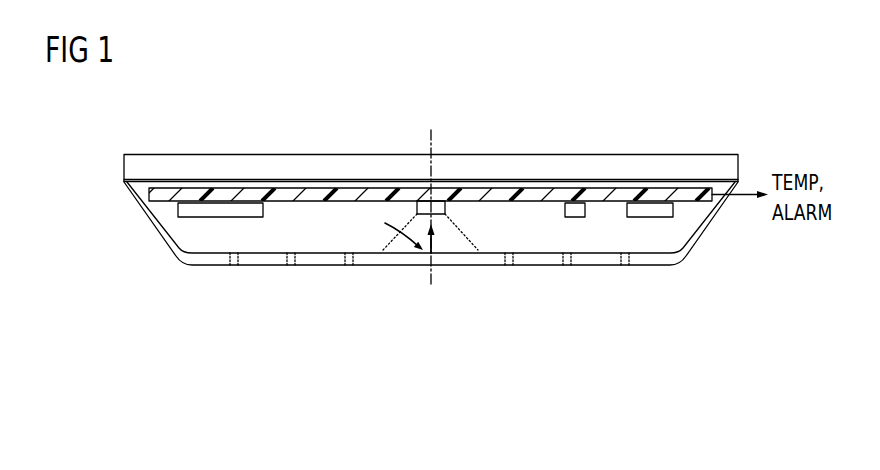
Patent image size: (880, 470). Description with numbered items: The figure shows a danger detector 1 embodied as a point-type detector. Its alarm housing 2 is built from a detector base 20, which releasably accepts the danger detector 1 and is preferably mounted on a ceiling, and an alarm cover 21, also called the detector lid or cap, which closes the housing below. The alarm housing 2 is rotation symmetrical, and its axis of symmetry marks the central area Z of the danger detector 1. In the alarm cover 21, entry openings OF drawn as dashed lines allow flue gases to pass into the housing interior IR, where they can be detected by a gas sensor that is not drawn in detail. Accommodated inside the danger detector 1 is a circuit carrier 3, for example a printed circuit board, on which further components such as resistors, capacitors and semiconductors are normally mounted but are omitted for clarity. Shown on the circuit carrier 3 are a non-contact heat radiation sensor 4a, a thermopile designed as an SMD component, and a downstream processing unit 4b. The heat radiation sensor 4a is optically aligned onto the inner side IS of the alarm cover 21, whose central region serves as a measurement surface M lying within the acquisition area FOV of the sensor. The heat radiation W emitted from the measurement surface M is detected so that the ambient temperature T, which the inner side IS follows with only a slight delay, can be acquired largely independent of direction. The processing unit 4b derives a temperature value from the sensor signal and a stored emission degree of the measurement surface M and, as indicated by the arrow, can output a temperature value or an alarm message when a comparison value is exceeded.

The danger detector 1 is at (401, 206).
The alarm housing 2 is at (401, 228).
The detector base 20 is at (124, 172).
The alarm cover 21 is at (692, 255).
The circuit carrier 3 is at (153, 199).
The heat radiation sensor 4a is at (445, 207).
The processing unit 4b is at (210, 210).
The central area Z is at (433, 152).
The heat radiation W is at (441, 239).
The ambient temperature T is at (399, 230).
The acquisition area FOV is at (548, 244).
The inner side IS is at (332, 252).
The measurement surface M is at (393, 252).
The housing interior IR is at (615, 244).
The entry openings OF is at (625, 268).